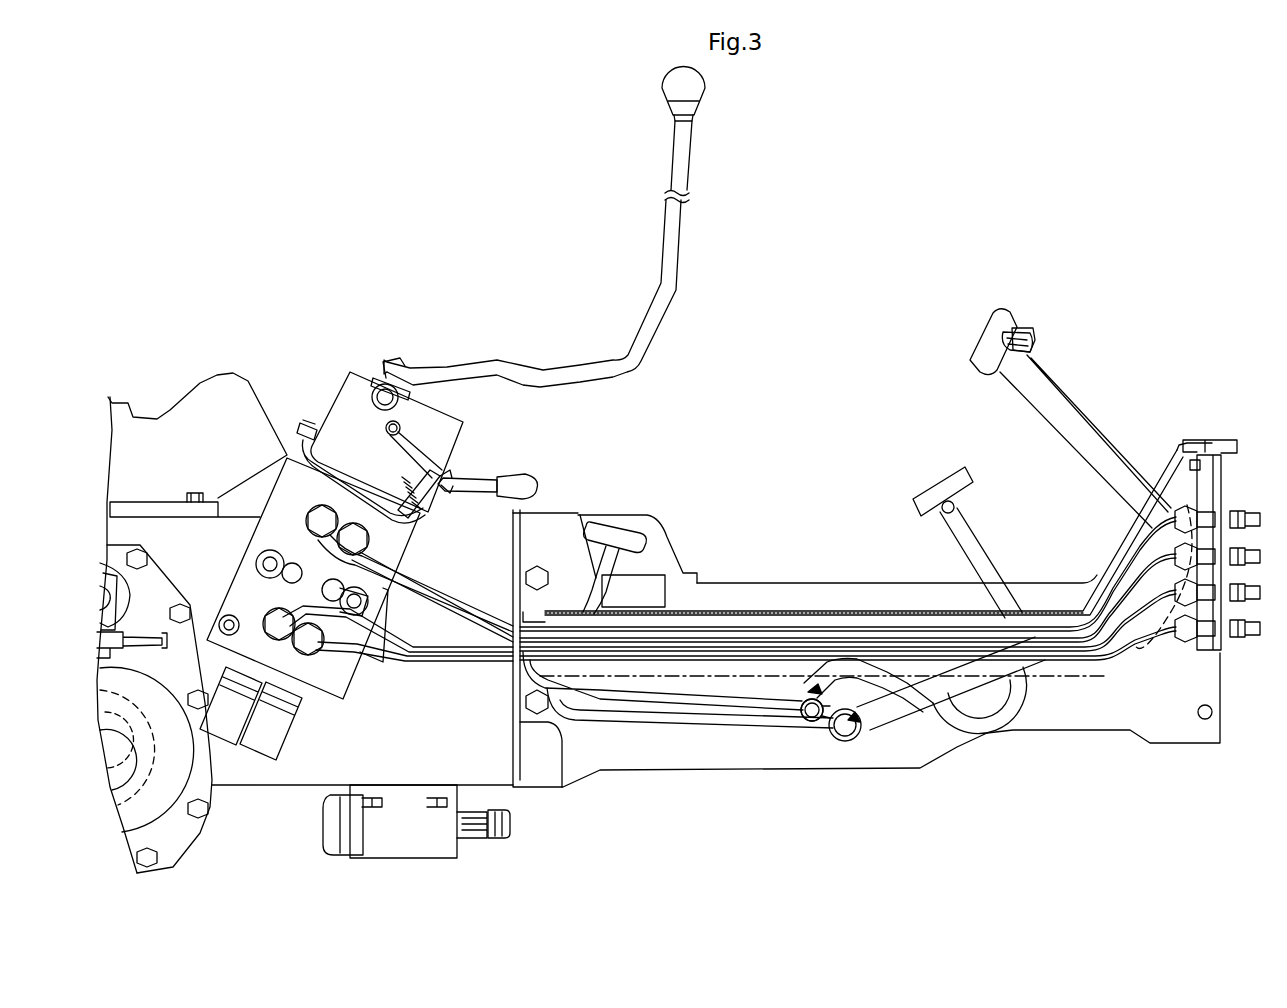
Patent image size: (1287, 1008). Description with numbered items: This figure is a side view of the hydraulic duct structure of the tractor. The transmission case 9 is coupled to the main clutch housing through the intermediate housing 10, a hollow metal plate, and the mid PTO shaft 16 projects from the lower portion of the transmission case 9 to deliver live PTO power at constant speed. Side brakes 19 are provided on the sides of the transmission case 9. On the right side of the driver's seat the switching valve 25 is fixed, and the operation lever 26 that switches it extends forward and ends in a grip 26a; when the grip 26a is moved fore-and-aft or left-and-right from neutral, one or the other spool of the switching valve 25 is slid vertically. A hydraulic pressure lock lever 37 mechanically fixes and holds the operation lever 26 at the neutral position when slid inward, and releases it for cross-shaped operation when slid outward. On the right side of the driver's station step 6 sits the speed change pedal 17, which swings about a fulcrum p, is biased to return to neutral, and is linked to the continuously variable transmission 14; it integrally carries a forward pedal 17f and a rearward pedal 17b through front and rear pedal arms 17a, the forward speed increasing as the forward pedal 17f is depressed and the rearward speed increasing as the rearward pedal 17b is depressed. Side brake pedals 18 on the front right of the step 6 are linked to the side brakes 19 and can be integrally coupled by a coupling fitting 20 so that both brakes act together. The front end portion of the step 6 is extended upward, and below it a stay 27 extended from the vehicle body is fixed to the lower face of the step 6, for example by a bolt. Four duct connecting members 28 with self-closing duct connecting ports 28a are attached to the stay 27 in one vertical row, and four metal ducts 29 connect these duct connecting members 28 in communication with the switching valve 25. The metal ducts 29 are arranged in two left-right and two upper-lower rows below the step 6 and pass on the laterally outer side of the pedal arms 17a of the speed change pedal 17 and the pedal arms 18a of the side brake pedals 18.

The grip 26a is at (704, 86).
The operation lever 26 is at (660, 244).
The hydraulic pressure lock lever 37 is at (515, 478).
The side brake 19 is at (172, 840).
The transmission case 9 is at (282, 787).
The switching valve 25 is at (240, 568).
The metal duct 29 is at (698, 657).
The intermediate housing 10 is at (1085, 730).
The driver's station step 6 is at (878, 605).
The continuously variable transmission 14 is at (667, 553).
The rearward pedal 17b is at (622, 522).
The forward pedal 17f is at (944, 487).
The speed change pedal 17 is at (985, 543).
The pedal arm 17a is at (730, 705).
The pedal arm 18a is at (963, 683).
The fulcrum p is at (812, 716).
The side brake pedal 18 is at (1035, 330).
The coupling fitting 20 is at (1040, 350).
The stay 27 is at (1217, 470).
The duct connecting member 28 is at (1173, 507).
The duct connecting port 28a is at (1250, 510).
The mid PTO shaft 16 is at (503, 838).